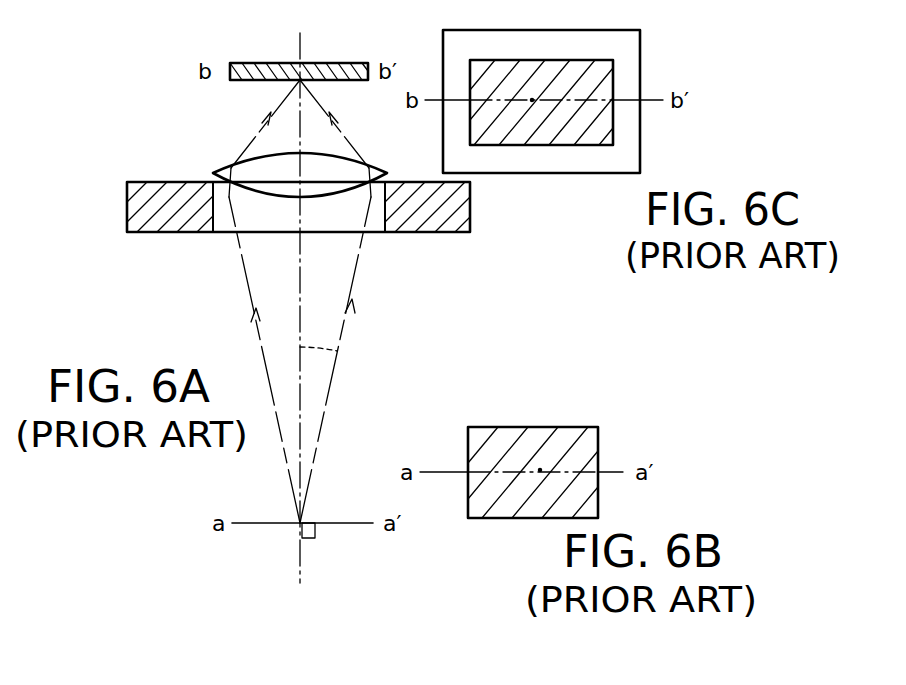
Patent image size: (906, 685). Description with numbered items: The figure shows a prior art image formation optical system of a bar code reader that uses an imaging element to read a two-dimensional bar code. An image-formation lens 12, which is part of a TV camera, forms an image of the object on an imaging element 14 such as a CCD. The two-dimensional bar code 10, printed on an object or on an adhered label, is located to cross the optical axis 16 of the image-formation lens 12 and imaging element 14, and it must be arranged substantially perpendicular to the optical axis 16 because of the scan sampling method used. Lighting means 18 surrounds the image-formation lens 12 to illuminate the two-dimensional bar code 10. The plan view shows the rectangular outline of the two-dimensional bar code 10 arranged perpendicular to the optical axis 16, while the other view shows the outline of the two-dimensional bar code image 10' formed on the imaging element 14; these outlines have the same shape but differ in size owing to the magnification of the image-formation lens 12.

In FIG. 6A, the two-dimensional bar code 10 is at (302, 553).
In FIG. 6B, the two-dimensional bar code 10 is at (533, 438).
In FIG. 6C, the two-dimensional bar code image 10' is at (541, 140).
In FIG. 6A, the image-formation lens 12 is at (219, 172).
In FIG. 6A, the imaging element 14 is at (347, 62).
In FIG. 6C, the imaging element 14 is at (640, 151).
In FIG. 6A, the optical axis 16 is at (338, 353).
In FIG. 6C, the optical axis 16 is at (532, 103).
In FIG. 6B, the optical axis 16 is at (541, 468).
In FIG. 6A, the lighting means 18 is at (430, 233).